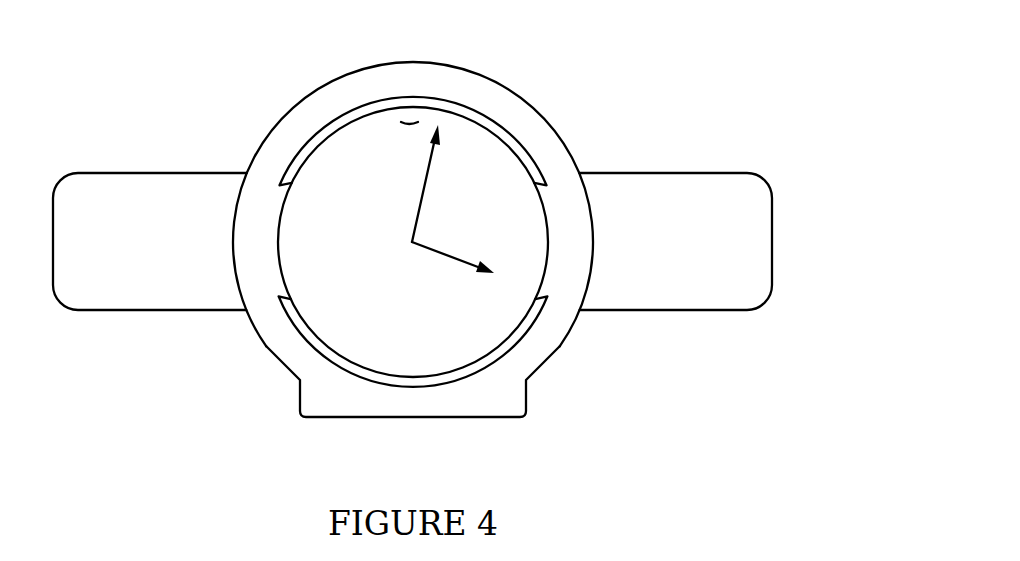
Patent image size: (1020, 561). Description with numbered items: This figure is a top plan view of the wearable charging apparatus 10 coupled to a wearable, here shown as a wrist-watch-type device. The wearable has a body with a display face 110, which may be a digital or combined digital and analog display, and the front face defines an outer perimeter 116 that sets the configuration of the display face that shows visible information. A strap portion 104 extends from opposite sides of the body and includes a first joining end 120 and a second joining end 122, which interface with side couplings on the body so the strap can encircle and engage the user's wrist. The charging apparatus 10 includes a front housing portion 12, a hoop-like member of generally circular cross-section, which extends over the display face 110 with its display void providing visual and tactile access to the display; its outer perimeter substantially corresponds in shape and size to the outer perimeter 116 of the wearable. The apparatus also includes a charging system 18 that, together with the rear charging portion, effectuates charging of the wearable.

The wearable charging apparatus 10 is at (317, 445).
The front housing portion 12 is at (305, 97).
The charging system 18 is at (527, 355).
The strap portion 104 is at (700, 160).
The display face 110 is at (407, 120).
The outer perimeter 116 is at (457, 122).
The first joining end 120 is at (227, 344).
The second joining end 122 is at (592, 333).